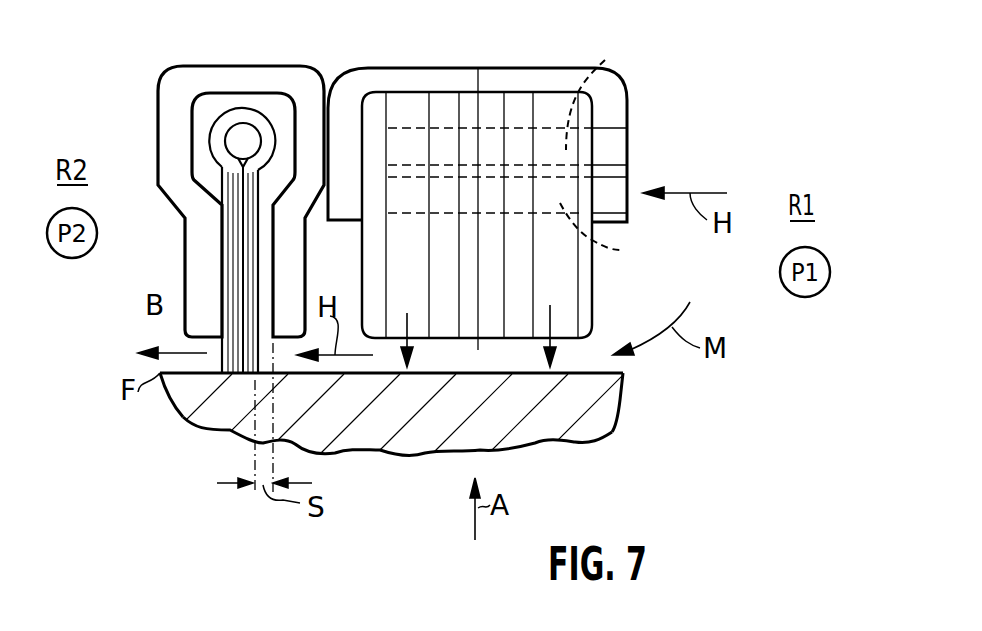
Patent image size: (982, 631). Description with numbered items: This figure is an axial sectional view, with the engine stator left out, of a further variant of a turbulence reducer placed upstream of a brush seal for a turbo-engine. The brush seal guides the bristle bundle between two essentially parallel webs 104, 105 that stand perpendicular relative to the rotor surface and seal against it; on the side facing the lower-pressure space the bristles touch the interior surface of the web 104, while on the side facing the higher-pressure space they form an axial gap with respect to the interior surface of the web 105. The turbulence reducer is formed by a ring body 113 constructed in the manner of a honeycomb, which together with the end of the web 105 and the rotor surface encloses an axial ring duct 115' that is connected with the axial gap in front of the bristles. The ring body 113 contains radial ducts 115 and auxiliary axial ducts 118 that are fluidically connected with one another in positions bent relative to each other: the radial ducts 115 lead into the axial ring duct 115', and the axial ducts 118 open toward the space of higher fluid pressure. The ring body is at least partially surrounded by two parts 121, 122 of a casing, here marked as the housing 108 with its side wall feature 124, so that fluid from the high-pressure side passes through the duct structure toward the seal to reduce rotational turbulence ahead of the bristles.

The web 104 is at (190, 265).
The web 105 is at (288, 258).
The cartridge housing 108 is at (645, 65).
The ring body 113 is at (515, 262).
The radial ducts 115 is at (459, 258).
The axial ring duct 115' is at (445, 246).
The axial ducts 118 is at (605, 63).
The casing part 121 is at (376, 68).
The casing part 122 is at (541, 70).
The side wall grooves 124 is at (617, 188).